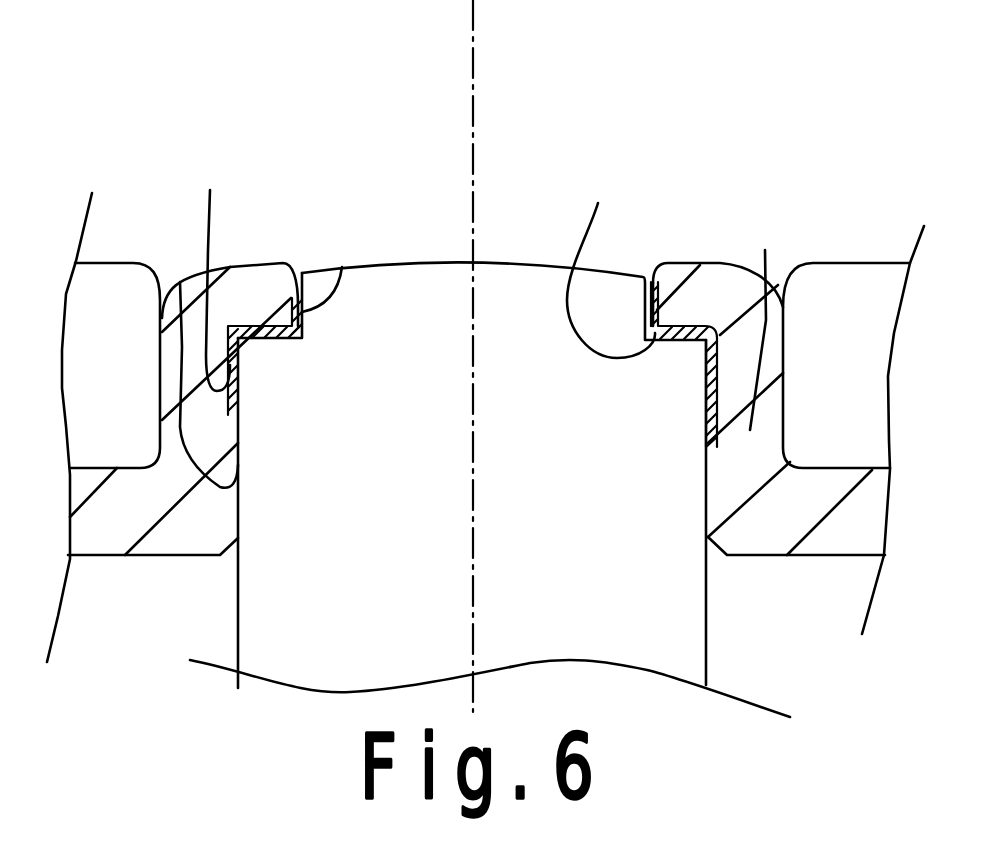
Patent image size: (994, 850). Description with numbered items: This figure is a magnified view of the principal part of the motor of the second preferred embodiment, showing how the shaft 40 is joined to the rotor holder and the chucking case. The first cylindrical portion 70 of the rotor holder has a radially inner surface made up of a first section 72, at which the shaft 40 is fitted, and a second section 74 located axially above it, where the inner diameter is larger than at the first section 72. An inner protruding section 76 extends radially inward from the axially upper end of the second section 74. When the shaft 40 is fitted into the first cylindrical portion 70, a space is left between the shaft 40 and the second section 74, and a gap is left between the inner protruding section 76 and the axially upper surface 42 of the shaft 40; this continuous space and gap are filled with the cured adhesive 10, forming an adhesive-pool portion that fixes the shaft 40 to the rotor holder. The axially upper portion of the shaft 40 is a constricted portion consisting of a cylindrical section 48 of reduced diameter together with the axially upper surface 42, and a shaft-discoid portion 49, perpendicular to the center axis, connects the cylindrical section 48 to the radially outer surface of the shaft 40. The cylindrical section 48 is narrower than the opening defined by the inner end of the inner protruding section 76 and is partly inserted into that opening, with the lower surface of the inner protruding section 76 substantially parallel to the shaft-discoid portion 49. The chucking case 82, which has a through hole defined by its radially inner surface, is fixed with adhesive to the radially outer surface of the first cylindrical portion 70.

The cured adhesive 10 is at (645, 277).
The shaft 40 is at (390, 363).
The axially upper surface 42 is at (493, 263).
The cylindrical section 48 is at (342, 267).
The shaft-discoid portion 49 is at (598, 203).
The first cylindrical portion 70 is at (765, 250).
The first section 72 is at (180, 282).
The second section 74 is at (210, 190).
The inner protruding section 76 is at (675, 282).
The chucking case 82 is at (835, 362).